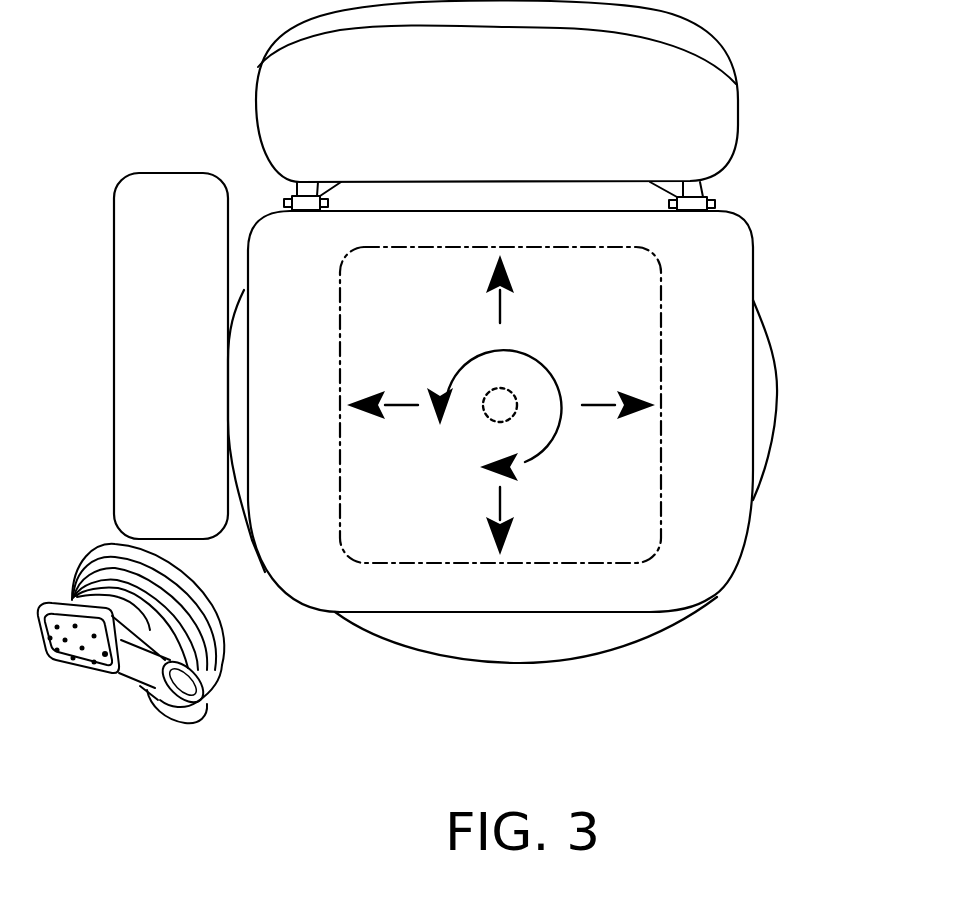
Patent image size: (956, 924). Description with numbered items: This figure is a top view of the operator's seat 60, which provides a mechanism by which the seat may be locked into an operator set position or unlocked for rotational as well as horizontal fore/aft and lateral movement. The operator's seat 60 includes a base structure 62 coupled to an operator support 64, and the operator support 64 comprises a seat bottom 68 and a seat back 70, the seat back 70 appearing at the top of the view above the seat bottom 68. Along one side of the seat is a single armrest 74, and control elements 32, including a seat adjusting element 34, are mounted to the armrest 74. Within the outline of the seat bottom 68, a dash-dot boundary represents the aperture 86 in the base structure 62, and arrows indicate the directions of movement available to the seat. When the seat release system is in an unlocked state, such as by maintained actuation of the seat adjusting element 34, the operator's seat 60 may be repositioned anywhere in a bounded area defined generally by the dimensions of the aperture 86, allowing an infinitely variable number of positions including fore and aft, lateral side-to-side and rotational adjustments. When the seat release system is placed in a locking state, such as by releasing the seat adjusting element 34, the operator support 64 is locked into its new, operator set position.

The control elements 32 is at (43, 600).
The seat adjusting element 34 is at (163, 720).
The operator's seat 60 is at (795, 300).
The base structure 62 is at (400, 645).
The operator support 64 is at (636, 683).
The seat bottom 68 is at (683, 585).
The seat back 70 is at (283, 92).
The armrest 74 is at (142, 249).
The aperture 86 is at (662, 488).